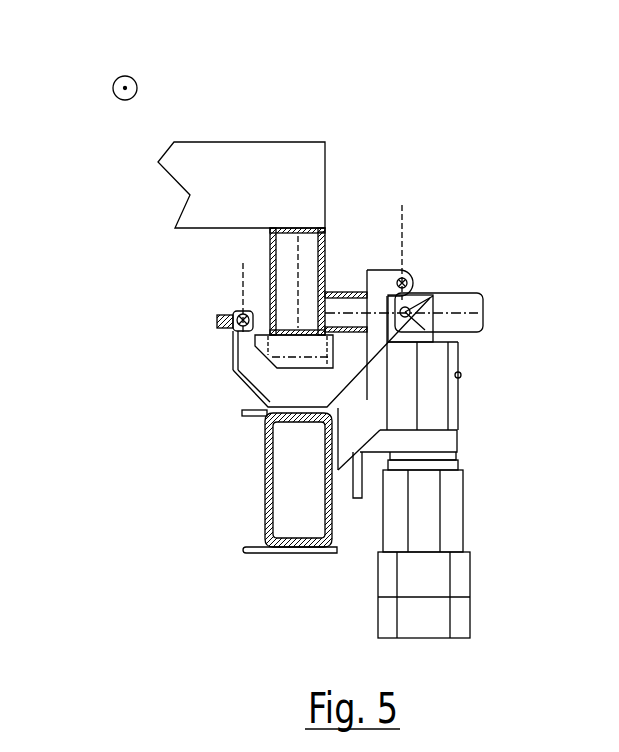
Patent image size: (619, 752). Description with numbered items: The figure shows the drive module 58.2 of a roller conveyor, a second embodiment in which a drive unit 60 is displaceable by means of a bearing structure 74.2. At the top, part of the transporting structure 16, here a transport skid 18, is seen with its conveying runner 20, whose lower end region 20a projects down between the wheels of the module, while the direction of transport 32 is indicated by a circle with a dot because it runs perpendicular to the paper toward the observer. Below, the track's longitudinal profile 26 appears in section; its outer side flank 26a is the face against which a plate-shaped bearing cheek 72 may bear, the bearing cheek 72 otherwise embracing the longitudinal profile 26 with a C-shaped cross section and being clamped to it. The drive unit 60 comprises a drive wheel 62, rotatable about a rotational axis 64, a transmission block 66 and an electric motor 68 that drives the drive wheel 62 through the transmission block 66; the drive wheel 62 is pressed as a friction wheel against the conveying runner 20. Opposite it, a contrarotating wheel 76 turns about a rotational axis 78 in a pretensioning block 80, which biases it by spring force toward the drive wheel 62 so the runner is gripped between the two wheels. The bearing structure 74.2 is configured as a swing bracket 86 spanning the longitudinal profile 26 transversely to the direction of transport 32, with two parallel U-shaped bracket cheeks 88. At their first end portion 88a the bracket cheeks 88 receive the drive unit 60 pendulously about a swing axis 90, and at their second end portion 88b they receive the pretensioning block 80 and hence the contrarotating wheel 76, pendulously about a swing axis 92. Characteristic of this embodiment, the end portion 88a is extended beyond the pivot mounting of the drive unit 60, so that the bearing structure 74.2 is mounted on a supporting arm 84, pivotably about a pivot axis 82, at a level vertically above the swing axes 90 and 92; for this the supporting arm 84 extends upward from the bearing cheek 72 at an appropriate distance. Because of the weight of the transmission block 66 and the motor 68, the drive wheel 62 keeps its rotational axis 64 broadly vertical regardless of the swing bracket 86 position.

The transporting structure 16 is at (218, 145).
The transport skid 18 is at (285, 156).
The conveying runner 20 is at (272, 232).
The tube end 20a is at (327, 232).
The longitudinal profile 26 is at (280, 512).
The outer side flank 26a is at (340, 532).
The direction of transport 32 is at (113, 88).
The drive module 58.2 is at (422, 93).
The drive unit 60 is at (500, 547).
The drive wheel 62 is at (462, 305).
The rotational axis 64 is at (402, 210).
The transmission block 66 is at (438, 378).
The motor 68 is at (448, 505).
The bearing cheek 72 is at (242, 413).
The bearing structure 74.2 is at (235, 366).
The contrarotating wheel 76 is at (228, 330).
The rotational axis 78 is at (243, 275).
The pretensioning block 80 is at (240, 318).
The pivot axis 82 is at (400, 280).
The supporting arm 84 is at (378, 407).
The swing bracket 86 is at (252, 387).
The bracket cheek 88 is at (386, 355).
The first end portion 88a is at (438, 297).
The second end portion 88b is at (233, 312).
The swing axis 90 is at (410, 310).
The swing axis 92 is at (232, 347).